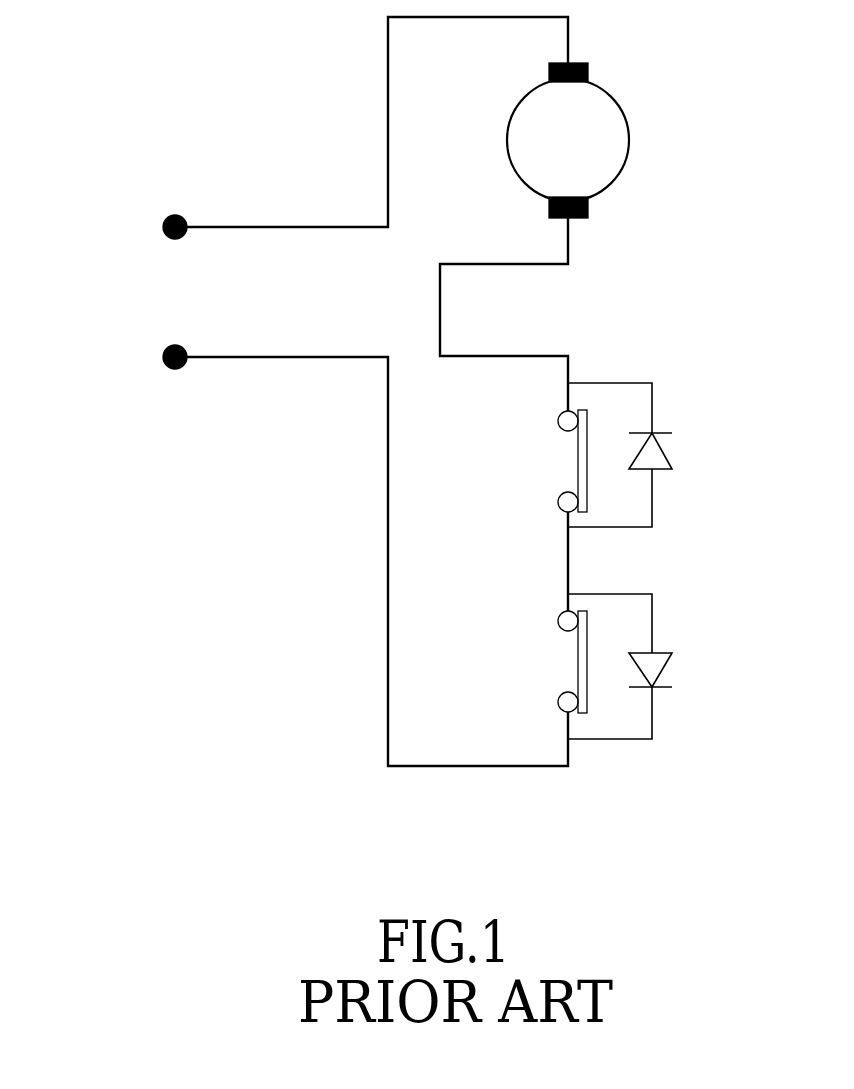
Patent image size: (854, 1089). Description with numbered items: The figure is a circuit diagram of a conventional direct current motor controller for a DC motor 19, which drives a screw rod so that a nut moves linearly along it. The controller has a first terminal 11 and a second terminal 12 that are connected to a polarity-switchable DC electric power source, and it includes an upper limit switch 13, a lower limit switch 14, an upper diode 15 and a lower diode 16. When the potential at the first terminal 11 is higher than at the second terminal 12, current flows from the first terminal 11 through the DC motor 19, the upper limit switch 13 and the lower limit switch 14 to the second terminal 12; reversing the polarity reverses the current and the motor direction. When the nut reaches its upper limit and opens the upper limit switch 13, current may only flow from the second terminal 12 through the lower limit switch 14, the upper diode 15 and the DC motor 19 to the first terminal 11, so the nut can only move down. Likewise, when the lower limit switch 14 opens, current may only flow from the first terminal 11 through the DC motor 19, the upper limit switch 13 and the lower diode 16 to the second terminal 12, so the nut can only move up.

The first terminal 11 is at (163, 225).
The second terminal 12 is at (163, 353).
The upper limit switch 13 is at (577, 459).
The lower limit switch 14 is at (577, 661).
The upper diode 15 is at (662, 451).
The lower diode 16 is at (662, 669).
The DC motor 19 is at (632, 140).